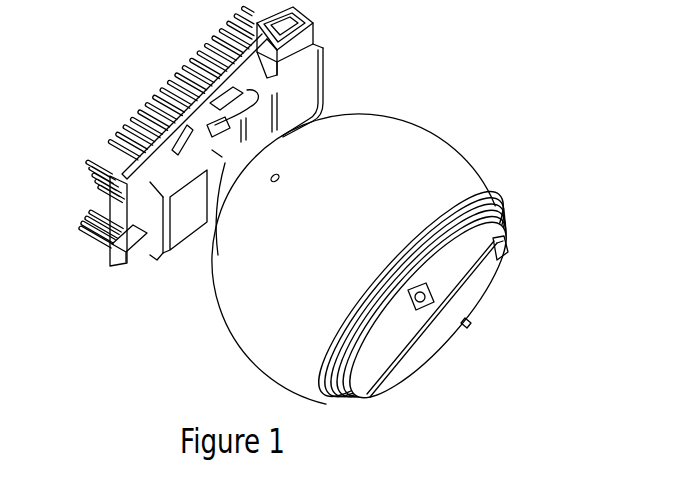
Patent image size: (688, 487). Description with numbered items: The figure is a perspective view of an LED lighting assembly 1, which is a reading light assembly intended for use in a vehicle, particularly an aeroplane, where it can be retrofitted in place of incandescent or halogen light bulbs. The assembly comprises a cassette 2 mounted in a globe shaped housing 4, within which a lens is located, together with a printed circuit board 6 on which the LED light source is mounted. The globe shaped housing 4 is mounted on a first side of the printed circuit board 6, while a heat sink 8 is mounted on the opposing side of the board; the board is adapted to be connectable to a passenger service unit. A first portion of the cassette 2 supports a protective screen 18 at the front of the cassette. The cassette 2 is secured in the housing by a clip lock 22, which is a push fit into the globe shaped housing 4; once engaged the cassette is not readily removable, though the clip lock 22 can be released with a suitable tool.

The LED lighting assembly 1 is at (478, 93).
The cassette 2 is at (498, 216).
The globe shaped housing 4 is at (478, 163).
The printed circuit board 6 is at (320, 38).
The heat sink 8 is at (92, 168).
The protective screen 18 is at (415, 343).
The clip lock 22 is at (443, 245).